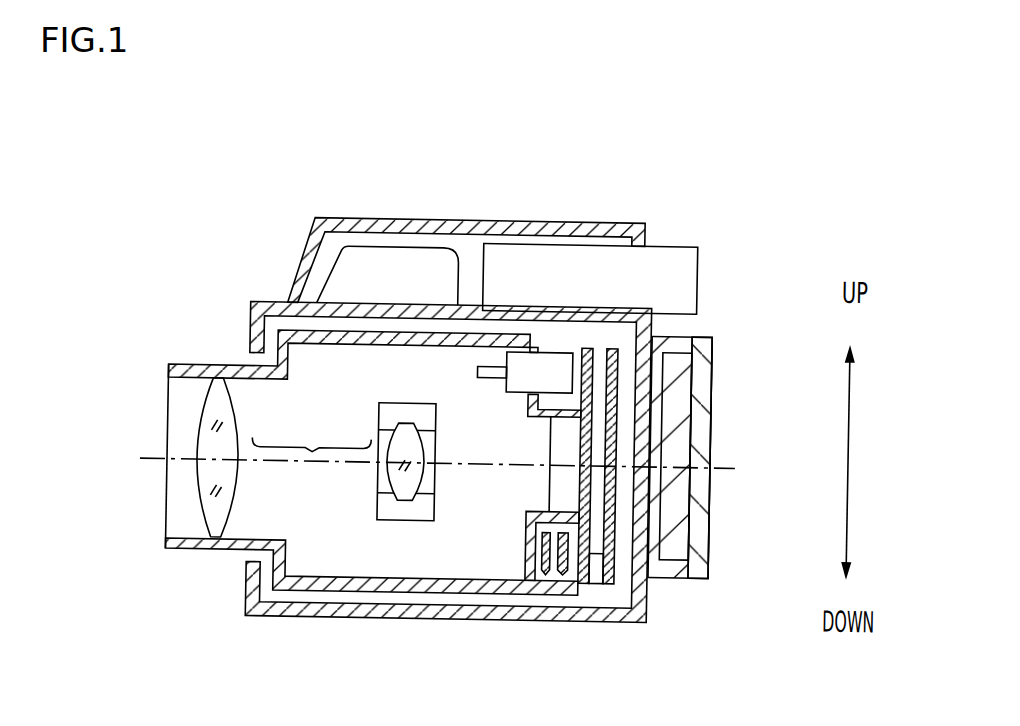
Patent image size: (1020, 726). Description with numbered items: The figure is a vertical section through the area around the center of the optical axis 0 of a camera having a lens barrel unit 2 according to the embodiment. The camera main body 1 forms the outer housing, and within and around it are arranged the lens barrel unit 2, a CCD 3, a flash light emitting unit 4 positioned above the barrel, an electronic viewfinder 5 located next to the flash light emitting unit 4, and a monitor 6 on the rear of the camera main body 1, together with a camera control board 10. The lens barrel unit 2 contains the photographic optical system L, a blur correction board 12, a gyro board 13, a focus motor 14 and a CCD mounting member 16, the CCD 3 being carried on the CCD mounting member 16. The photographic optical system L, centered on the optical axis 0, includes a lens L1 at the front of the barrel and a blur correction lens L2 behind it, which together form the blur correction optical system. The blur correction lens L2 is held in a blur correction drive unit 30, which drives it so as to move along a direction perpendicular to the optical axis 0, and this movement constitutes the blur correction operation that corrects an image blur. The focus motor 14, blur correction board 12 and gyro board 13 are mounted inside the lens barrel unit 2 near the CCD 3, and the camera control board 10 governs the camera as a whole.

The optical axis 0 is at (425, 470).
The camera main body 1 is at (285, 610).
The lens barrel unit 2 is at (186, 553).
The CCD 3 is at (554, 461).
The flash light emitting unit 4 is at (375, 264).
The electronic viewfinder 5 is at (677, 271).
The monitor 6 is at (682, 456).
The camera control board 10 is at (585, 581).
The blur correction board 12 is at (564, 573).
The gyro board 13 is at (549, 573).
The focus motor 14 is at (558, 371).
The CCD mounting member 16 is at (549, 416).
The blur correction drive unit 30 is at (421, 420).
The photographic optical system L is at (311, 465).
The lens L1 is at (223, 439).
The blur correction lens L2 is at (400, 443).